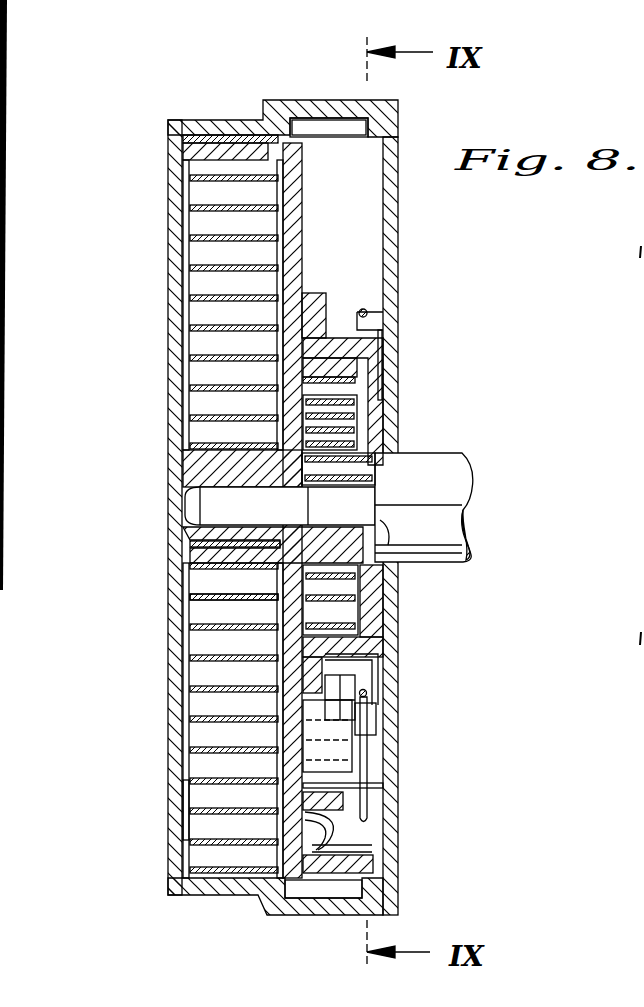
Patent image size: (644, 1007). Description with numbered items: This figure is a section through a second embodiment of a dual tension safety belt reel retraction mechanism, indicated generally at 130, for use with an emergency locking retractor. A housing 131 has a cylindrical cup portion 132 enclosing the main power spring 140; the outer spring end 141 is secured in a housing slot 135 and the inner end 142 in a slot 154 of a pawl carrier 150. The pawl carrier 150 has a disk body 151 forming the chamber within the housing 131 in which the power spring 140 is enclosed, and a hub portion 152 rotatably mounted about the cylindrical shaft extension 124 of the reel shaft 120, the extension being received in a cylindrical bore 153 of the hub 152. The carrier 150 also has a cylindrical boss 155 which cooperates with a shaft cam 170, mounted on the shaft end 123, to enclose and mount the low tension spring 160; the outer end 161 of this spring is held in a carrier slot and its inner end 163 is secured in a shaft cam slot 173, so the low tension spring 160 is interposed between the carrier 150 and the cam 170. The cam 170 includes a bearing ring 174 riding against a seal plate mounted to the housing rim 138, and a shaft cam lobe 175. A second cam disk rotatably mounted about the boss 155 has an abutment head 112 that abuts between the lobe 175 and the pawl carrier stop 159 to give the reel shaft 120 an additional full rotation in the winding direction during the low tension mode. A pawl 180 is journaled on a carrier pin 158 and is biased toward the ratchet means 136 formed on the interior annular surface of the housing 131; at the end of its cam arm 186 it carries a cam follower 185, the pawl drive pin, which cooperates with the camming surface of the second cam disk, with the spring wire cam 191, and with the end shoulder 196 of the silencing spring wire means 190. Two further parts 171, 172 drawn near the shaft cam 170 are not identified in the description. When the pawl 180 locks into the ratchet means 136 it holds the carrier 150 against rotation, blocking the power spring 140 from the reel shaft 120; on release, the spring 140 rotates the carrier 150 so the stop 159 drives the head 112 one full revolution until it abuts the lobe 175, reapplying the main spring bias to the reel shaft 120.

The abutment head 112 is at (348, 755).
The reel shaft 120 is at (447, 520).
The shaft end 123 is at (463, 507).
The cylindrical shaft extension 124 is at (222, 509).
The retraction mechanism 130 is at (158, 697).
The housing 131 is at (168, 880).
The cylindrical cup portion 132 is at (190, 118).
The housing slot 135 is at (242, 140).
The ratchet means 136 is at (342, 122).
The housing rim 138 is at (398, 906).
The main power spring 140 is at (215, 286).
The outer spring end 141 is at (182, 140).
The inner end 142 is at (180, 546).
The pawl carrier 150 is at (250, 447).
The disk body 151 is at (386, 219).
The hub portion 152 is at (185, 470).
The cylindrical bore 153 is at (182, 497).
The slot 154 is at (232, 548).
The cylindrical boss 155 is at (350, 642).
The carrier pin 158 is at (337, 837).
The pawl carrier stop 159 is at (300, 786).
The low tension spring 160 is at (347, 413).
The outer end 161 is at (345, 373).
The inner end 163 is at (368, 460).
The shaft cam 170 is at (378, 340).
The ring 171 is at (340, 442).
The retainer 172 is at (392, 522).
The shaft cam slot 173 is at (345, 482).
The bearing ring 174 is at (397, 598).
The shaft cam lobe 175 is at (360, 690).
The pawl 180 is at (375, 863).
The cam follower 185 is at (372, 737).
The cam arm 186 is at (181, 806).
The silencing spring wire means 190 is at (372, 712).
The spring wire cam 191 is at (366, 306).
The spring wire end shoulder 196 is at (367, 807).